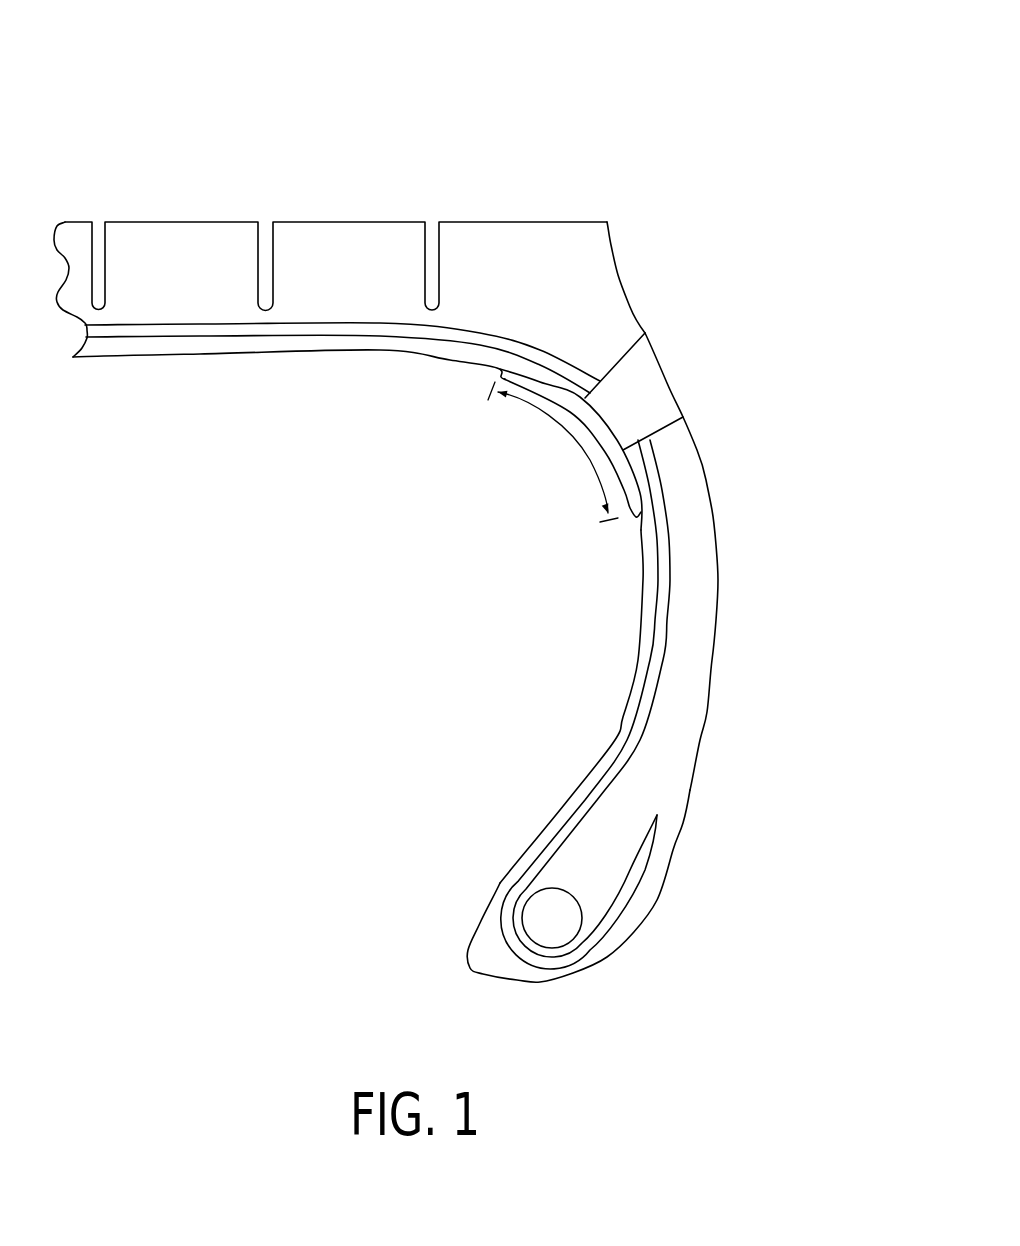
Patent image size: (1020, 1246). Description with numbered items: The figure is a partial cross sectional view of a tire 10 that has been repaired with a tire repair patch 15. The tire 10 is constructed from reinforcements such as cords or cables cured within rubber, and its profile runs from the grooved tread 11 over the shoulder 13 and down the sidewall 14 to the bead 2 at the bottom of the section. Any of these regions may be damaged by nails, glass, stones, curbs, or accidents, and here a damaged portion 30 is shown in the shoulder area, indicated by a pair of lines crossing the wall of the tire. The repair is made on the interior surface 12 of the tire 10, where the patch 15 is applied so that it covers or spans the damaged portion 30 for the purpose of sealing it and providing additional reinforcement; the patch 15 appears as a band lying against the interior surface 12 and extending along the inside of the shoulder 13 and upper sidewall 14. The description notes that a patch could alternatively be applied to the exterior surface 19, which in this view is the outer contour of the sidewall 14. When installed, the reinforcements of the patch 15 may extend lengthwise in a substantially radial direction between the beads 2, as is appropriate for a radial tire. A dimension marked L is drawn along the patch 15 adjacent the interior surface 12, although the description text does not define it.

The tire 10 is at (608, 98).
The tread 11 is at (450, 193).
The interior surface 12 is at (623, 717).
The shoulder 13 is at (635, 247).
The sidewall 14 is at (742, 557).
The tire repair patch 15 is at (623, 450).
The exterior surface 19 is at (707, 720).
The damaged portion 30 is at (688, 355).
The bead 2 is at (553, 942).
The length L is at (585, 450).